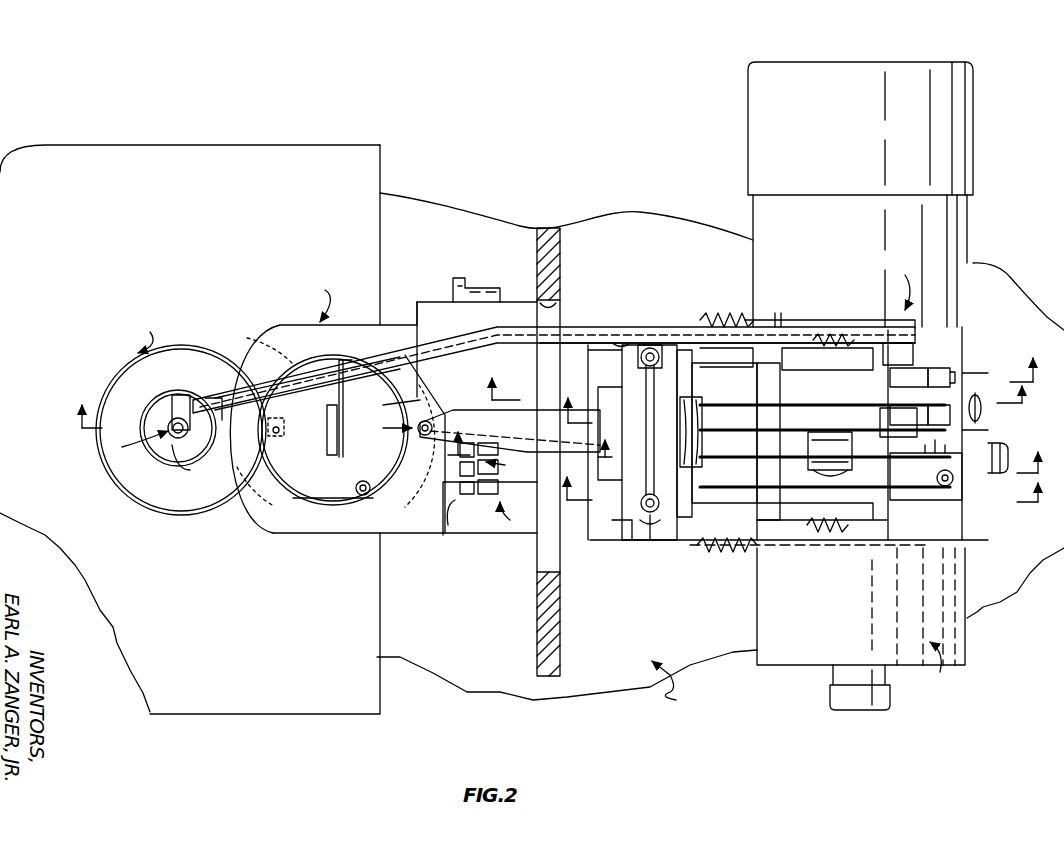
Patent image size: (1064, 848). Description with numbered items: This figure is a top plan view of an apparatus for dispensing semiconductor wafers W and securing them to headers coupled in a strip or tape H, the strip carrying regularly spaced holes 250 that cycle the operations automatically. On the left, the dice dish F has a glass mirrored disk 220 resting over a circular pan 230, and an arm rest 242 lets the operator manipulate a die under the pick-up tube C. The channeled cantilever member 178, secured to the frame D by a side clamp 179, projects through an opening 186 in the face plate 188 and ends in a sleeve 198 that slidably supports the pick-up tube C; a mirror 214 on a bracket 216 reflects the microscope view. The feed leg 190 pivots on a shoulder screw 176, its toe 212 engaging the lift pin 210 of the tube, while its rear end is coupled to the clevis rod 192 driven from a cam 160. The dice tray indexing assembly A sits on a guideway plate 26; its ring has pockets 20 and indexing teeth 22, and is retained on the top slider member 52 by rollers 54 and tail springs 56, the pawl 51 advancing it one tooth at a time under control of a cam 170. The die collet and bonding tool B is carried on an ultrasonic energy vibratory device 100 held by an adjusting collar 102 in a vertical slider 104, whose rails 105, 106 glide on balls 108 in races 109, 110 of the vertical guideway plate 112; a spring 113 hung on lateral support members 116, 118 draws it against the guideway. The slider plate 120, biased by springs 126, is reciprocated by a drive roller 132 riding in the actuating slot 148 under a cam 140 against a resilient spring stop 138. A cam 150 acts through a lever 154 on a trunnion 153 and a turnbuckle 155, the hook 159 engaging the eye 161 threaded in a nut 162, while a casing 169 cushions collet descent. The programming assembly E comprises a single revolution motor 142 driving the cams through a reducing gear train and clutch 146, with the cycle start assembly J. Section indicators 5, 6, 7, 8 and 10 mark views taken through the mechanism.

The arm rest 242 is at (190, 700).
The circular pan 230 is at (210, 505).
The glass mirrored disk 220 is at (190, 458).
The toe 212 is at (195, 462).
The sleeve 198 is at (172, 424).
The lift pin 210 is at (233, 411).
The guideway plate 26 is at (272, 337).
The indexing teeth 22 is at (410, 525).
The top slider member 52 is at (350, 482).
The rollers 54 is at (366, 496).
The indexing finger or pawl 51 is at (341, 427).
The tail springs 56 is at (265, 432).
The mirror 214 is at (322, 428).
The bracket 216 is at (346, 380).
The recessed pockets 20 is at (390, 407).
The channeled cantilever member 178 is at (452, 358).
The shoulder screw 176 is at (560, 330).
The feed leg 190 is at (865, 340).
The face plate 188 is at (562, 240).
The opening 186 is at (560, 300).
The ultrasonic energy vibratory device 100 is at (512, 417).
The adjusting collar 102 is at (598, 438).
The holes 250 is at (490, 497).
The vertical slider 104 is at (633, 382).
The balls 108 is at (642, 498).
The race 109 is at (650, 345).
The rail 106 is at (638, 345).
The rail 105 is at (630, 520).
The race 110 is at (655, 520).
The vertical guideway plate 112 is at (663, 480).
The nut 162 is at (722, 478).
The trunnion 153 is at (760, 380).
The slider plate 120 is at (800, 378).
The lateral support member 118 is at (850, 340).
The lever 154 is at (835, 393).
The turnbuckle 155 is at (805, 430).
The drive roller 132 is at (841, 451).
The actuating slot 148 is at (845, 473).
The hook 159 is at (910, 396).
The cam 150 is at (944, 396).
The clevis rod 192 is at (893, 343).
The cam 160 is at (935, 360).
The cam 140 is at (926, 470).
The casing 169 is at (952, 485).
The eye 161 is at (980, 397).
The resilient spring stop 138 is at (990, 475).
The lateral support member 116 is at (835, 528).
The spring 113 is at (790, 545).
The springs 126 is at (728, 552).
The side clamp 179 is at (752, 309).
The cam 170 is at (893, 520).
The single revolution motor 142 is at (960, 128).
The reducing gear train and clutch 146 is at (955, 230).
The section line 10 is at (277, 418).
The section line 5 is at (760, 383).
The section line 6 is at (788, 414).
The section line 7 is at (825, 461).
The section line 8 is at (809, 504).
The dice tray indexing assembly A is at (319, 298).
The die collet and bonding tool B is at (399, 427).
The pick-up tube C is at (137, 443).
The apparatus frame D is at (672, 686).
The programming assembly E is at (898, 286).
The dice dish F is at (143, 334).
The strip or tape of headers H is at (511, 518).
The cycle start assembly J is at (861, 629).
The semiconductor wafers W is at (507, 463).